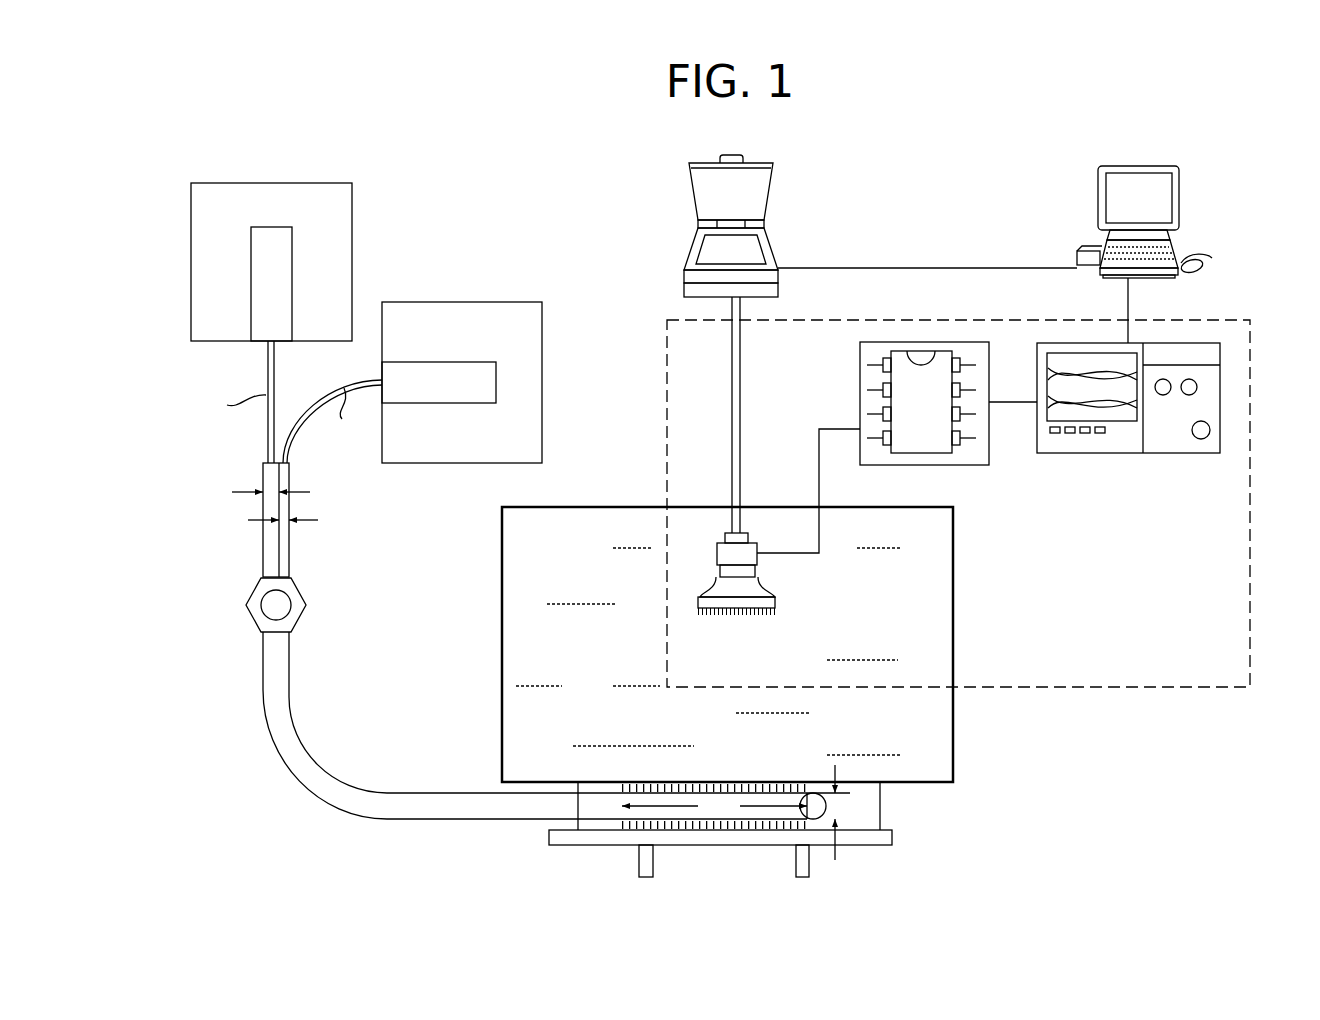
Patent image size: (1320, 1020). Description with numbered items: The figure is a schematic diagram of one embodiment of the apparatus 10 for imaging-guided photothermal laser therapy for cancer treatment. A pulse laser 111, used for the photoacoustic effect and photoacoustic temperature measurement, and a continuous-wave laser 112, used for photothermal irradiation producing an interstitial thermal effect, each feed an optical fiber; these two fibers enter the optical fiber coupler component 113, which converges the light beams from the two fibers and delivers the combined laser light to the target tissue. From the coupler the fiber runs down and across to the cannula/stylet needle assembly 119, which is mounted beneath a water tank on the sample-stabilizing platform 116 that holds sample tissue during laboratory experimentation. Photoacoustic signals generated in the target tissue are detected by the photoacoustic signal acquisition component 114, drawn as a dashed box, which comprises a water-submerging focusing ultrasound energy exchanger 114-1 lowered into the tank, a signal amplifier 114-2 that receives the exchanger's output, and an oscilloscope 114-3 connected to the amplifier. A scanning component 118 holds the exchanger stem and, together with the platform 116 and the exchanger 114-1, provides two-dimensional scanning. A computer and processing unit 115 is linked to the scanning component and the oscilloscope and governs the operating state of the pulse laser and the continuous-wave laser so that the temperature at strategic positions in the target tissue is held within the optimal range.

The apparatus 10 is at (1094, 793).
The pulse laser 111 is at (272, 227).
The continuous-wave laser 112 is at (452, 362).
The optical fiber coupler component 113 is at (302, 594).
The photoacoustic signal acquisition component 114 is at (1143, 673).
The water-submerging focusing ultrasound energy exchanger 114-1 is at (757, 588).
The signal amplifier 114-2 is at (860, 372).
The oscilloscope 114-3 is at (1172, 446).
The computer and processing unit 115 is at (1113, 195).
The sample-stabilizing platform 116 is at (893, 833).
The scanning component 118 is at (706, 195).
The cannula/stylet needle assembly 119 is at (677, 812).